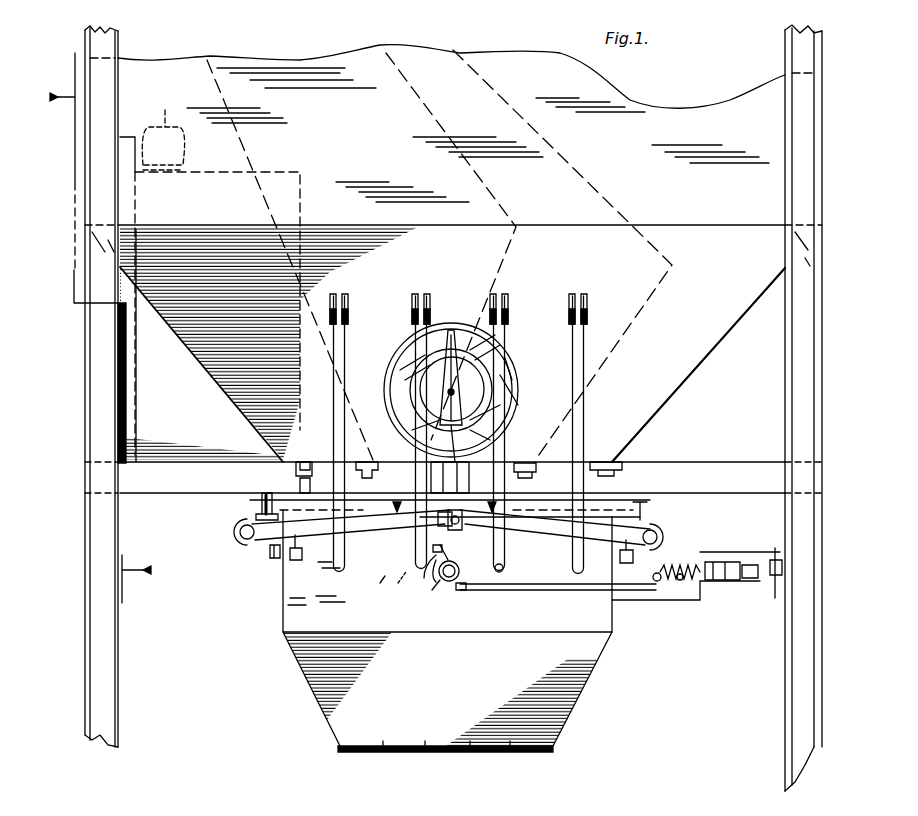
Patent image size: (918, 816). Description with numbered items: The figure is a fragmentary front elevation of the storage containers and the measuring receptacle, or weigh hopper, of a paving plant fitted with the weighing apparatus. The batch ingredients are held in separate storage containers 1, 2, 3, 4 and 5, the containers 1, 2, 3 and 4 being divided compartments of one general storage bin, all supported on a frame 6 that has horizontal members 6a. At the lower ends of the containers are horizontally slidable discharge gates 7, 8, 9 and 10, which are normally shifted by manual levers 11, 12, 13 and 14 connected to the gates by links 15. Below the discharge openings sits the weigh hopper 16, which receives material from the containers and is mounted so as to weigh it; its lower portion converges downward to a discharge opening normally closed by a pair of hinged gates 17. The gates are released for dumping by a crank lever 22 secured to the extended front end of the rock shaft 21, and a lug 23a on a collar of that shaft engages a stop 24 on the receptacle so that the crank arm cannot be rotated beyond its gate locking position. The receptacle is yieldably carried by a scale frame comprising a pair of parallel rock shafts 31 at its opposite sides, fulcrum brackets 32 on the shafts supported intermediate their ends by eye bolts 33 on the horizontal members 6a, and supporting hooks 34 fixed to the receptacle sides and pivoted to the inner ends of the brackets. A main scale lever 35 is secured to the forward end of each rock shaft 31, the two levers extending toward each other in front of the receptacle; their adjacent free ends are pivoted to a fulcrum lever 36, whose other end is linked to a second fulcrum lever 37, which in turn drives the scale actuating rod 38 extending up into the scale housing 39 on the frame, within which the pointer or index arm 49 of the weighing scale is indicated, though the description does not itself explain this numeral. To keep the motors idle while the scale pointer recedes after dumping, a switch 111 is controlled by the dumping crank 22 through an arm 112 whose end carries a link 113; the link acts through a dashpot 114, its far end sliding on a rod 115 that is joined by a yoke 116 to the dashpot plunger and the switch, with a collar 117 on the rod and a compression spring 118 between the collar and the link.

The storage container 1 is at (702, 339).
The storage container 2 is at (612, 222).
The storage container 3 is at (480, 215).
The storage container 4 is at (198, 341).
The storage container 5 is at (152, 392).
The frame 6 is at (800, 366).
The horizontal member 6a is at (146, 480).
The gate 7 is at (592, 466).
The gate 8 is at (516, 464).
The gate 9 is at (378, 466).
The gate 10 is at (306, 468).
The manual lever 11 is at (585, 376).
The manual lever 12 is at (505, 337).
The manual lever 13 is at (416, 331).
The manual lever 14 is at (333, 349).
The link 15 is at (300, 476).
The weigh hopper 16 is at (577, 684).
The gate 17 is at (470, 753).
The rock shaft 21 is at (446, 583).
The crank lever 22 is at (503, 570).
The lug 23a is at (386, 588).
The stop 24 is at (437, 549).
The rock shaft 31 is at (262, 546).
The fulcrum bracket 32 is at (244, 534).
The eye bolt 33 is at (255, 514).
The supporting hook 34 is at (300, 548).
The main scale lever 35 is at (320, 546).
The fulcrum lever 36 is at (470, 526).
The second fulcrum lever 37 is at (458, 530).
The scale actuating rod 38 is at (445, 517).
The scale housing 39 is at (388, 363).
The pointer 49 is at (450, 330).
The switch 111 is at (774, 582).
The arm 112 is at (447, 583).
The link 113 is at (550, 591).
The dashpot 114 is at (730, 582).
The rod 115 is at (686, 577).
The yoke 116 is at (746, 582).
The collar 117 is at (656, 581).
The compression spring 118 is at (679, 581).